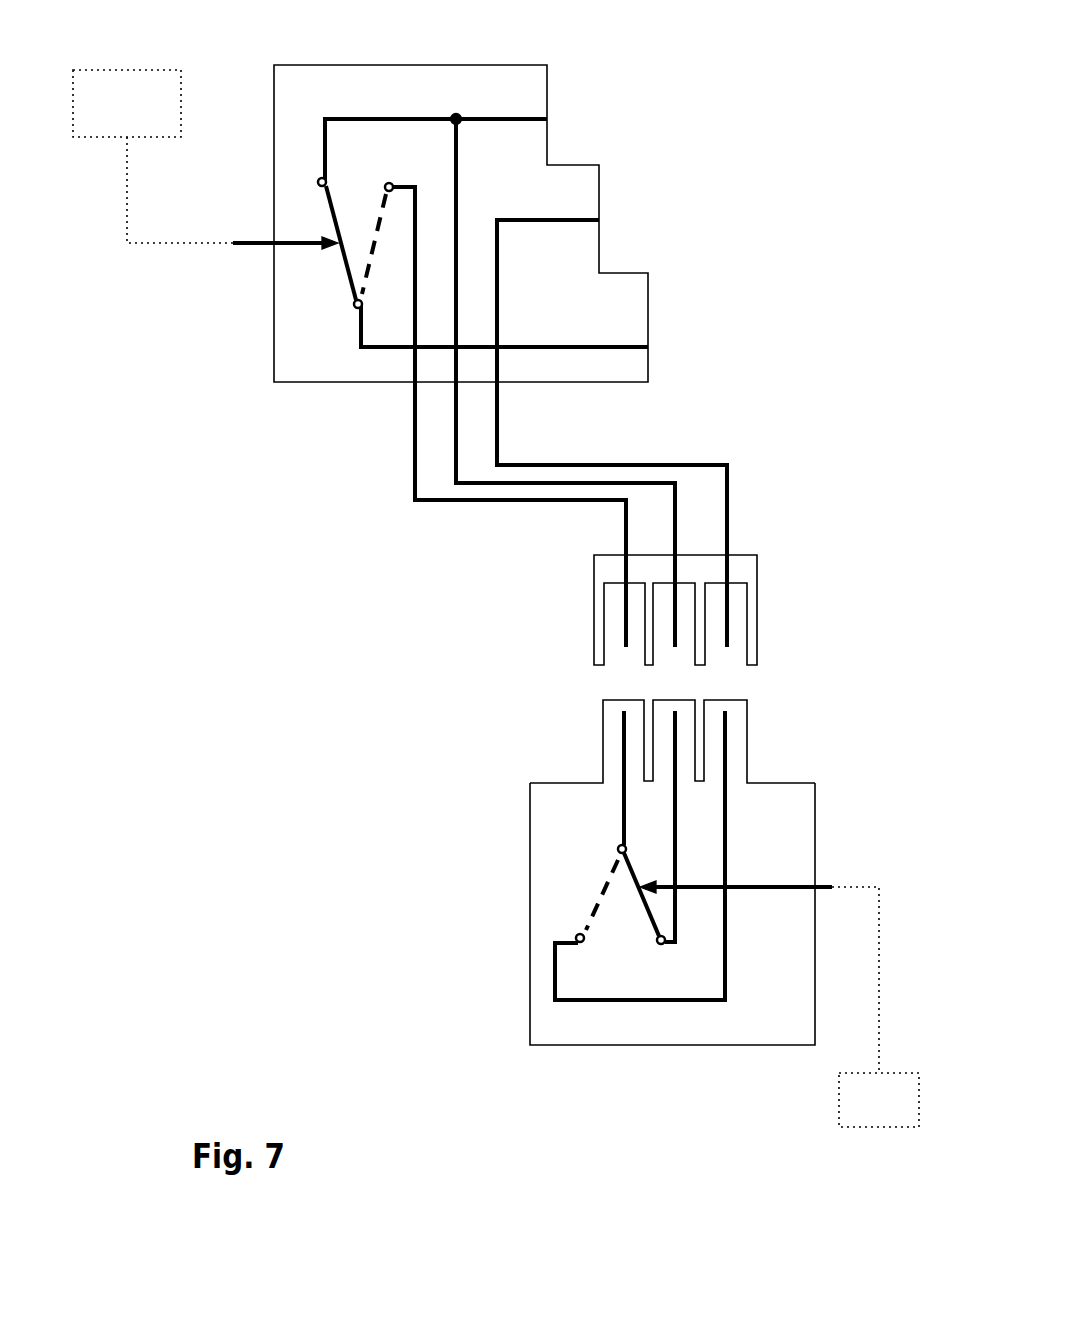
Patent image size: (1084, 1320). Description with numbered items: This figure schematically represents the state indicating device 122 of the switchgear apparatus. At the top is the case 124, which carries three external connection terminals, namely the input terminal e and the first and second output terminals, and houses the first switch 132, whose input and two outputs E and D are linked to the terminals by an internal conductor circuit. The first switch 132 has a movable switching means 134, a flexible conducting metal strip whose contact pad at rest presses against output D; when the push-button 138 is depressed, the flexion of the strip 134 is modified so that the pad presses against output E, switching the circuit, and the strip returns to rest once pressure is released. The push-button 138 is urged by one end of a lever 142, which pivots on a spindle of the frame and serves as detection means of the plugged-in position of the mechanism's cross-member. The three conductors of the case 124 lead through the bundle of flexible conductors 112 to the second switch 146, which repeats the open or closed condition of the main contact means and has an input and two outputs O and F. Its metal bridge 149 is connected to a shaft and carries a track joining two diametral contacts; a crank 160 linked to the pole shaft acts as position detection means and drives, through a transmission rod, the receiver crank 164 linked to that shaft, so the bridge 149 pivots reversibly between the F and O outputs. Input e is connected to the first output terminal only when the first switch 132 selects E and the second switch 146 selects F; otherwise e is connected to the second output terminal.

The bundle of flexible conductors 112 is at (528, 502).
The state indicating device 122 is at (383, 632).
The case 124 is at (398, 65).
The first switch 132 is at (702, 180).
The movable switching means 134 is at (355, 310).
The push-button 138 is at (250, 245).
The lever 142 is at (113, 83).
The second switch 146 is at (467, 1002).
The metal bridge 149 is at (640, 913).
The crank 160 is at (853, 1112).
The receiver crank 164 is at (760, 885).